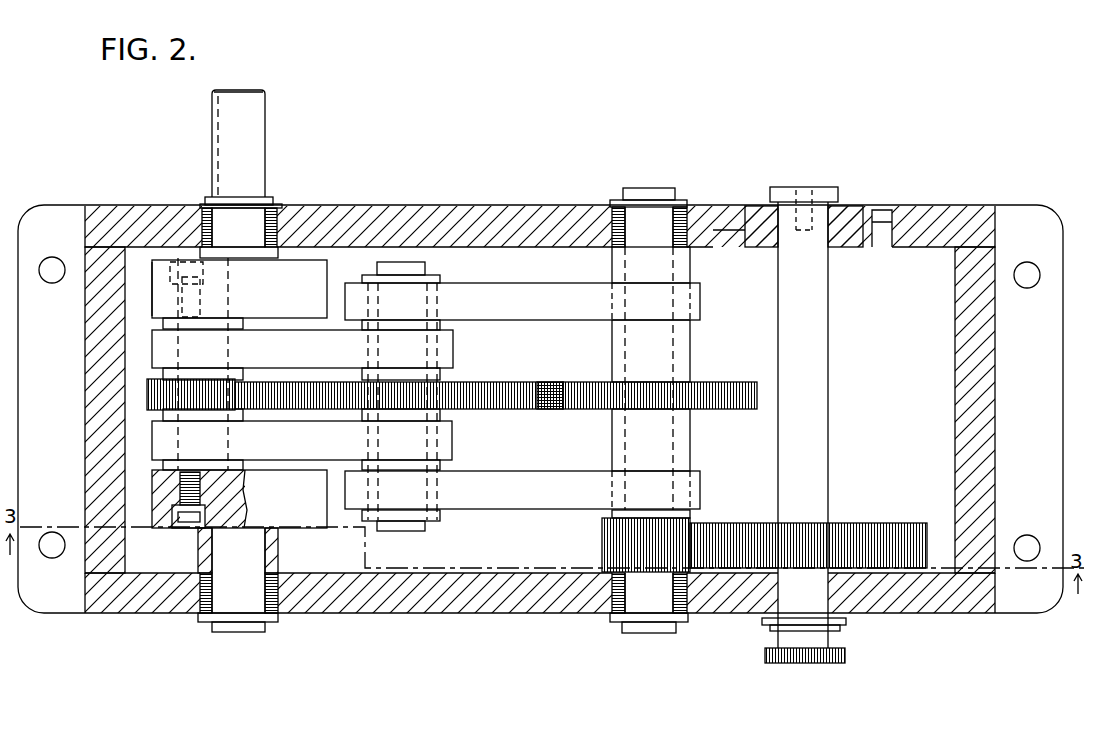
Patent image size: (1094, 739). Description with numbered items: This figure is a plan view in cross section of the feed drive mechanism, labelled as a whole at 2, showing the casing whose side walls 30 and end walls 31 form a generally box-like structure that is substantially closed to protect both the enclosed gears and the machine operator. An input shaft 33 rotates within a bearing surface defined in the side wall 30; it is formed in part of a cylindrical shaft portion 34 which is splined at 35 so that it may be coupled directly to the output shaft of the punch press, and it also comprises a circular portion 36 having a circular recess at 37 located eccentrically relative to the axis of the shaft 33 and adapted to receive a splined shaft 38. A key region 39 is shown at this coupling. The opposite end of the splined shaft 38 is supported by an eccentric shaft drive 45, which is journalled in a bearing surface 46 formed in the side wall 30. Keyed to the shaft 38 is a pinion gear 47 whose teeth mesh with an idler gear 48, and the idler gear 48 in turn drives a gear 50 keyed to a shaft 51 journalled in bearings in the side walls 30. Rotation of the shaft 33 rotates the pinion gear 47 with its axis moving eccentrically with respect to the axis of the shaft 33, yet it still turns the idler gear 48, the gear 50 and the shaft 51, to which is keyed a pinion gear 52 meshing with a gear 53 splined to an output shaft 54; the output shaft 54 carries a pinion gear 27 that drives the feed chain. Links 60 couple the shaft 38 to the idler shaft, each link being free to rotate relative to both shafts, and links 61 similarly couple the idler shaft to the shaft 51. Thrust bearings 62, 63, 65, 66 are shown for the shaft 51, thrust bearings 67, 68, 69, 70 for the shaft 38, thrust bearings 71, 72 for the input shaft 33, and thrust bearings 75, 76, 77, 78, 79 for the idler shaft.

The housing plate 2 is at (18, 348).
The pinion gear 27 is at (845, 656).
The side walls 30 is at (432, 216).
The end walls 31 is at (85, 348).
The input shaft 33 is at (255, 145).
The cylindrical shaft portion 34 is at (240, 85).
The spline 35 is at (218, 122).
The circular portion 36 is at (327, 294).
The circular recess 37 is at (229, 300).
The splined shaft 38 is at (178, 305).
The key 39 is at (205, 280).
The eccentric shaft drive 45 is at (320, 512).
The bearing surface 46 is at (272, 603).
The pinion gear 47 is at (153, 410).
The idler gear 48 is at (484, 404).
The gear 50 is at (706, 408).
The shaft 51 is at (645, 190).
The pinion gear 52 is at (602, 532).
The gear 53 is at (878, 521).
The output shaft 54 is at (828, 351).
The links 60 is at (453, 349).
The links 61 is at (545, 280).
The thrust bearing 62 is at (690, 270).
The thrust bearing 63 is at (690, 352).
The thrust bearing 65 is at (692, 515).
The thrust bearing 66 is at (606, 572).
The thrust bearing 67 is at (163, 323).
The thrust bearing 68 is at (163, 375).
The thrust bearing 69 is at (243, 415).
The thrust bearing 70 is at (163, 465).
The thrust bearing 71 is at (278, 556).
The thrust bearing 72 is at (280, 252).
The thrust bearing 75 is at (438, 283).
The thrust bearing 76 is at (442, 326).
The thrust bearing 77 is at (442, 378).
The thrust bearing 78 is at (362, 415).
The thrust bearing 79 is at (442, 466).